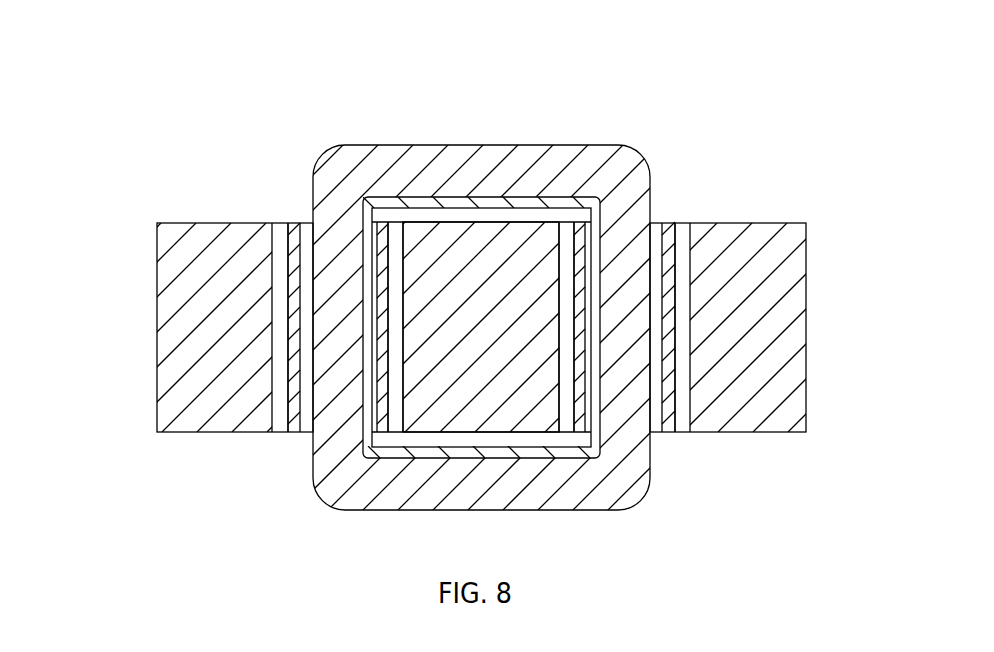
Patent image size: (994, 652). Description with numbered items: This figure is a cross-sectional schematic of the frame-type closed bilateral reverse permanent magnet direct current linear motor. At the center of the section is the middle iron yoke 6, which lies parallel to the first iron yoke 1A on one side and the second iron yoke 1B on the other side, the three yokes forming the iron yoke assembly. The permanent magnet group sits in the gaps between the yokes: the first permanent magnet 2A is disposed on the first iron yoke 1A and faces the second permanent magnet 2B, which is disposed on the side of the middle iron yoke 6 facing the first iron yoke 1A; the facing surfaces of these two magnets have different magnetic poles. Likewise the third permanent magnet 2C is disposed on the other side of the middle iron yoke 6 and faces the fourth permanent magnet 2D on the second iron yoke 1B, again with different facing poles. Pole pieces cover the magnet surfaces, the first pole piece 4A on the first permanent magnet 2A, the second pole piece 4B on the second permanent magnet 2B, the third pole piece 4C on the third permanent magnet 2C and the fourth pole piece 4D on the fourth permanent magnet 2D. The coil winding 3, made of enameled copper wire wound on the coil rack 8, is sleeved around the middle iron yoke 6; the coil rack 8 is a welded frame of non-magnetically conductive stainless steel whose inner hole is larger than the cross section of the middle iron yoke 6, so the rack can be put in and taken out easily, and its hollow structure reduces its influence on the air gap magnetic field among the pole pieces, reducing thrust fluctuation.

The first iron yoke 1A is at (217, 272).
The second iron yoke 1B is at (769, 252).
The first permanent magnet 2A is at (280, 338).
The second permanent magnet 2B is at (396, 283).
The third permanent magnet 2C is at (565, 283).
The fourth permanent magnet 2D is at (682, 327).
The coil winding 3 is at (428, 168).
The first pole piece 4A is at (294, 413).
The second pole piece 4B is at (380, 345).
The third pole piece 4C is at (580, 340).
The fourth pole piece 4D is at (668, 402).
The middle iron yoke 6 is at (487, 320).
The coil rack 8 is at (590, 453).